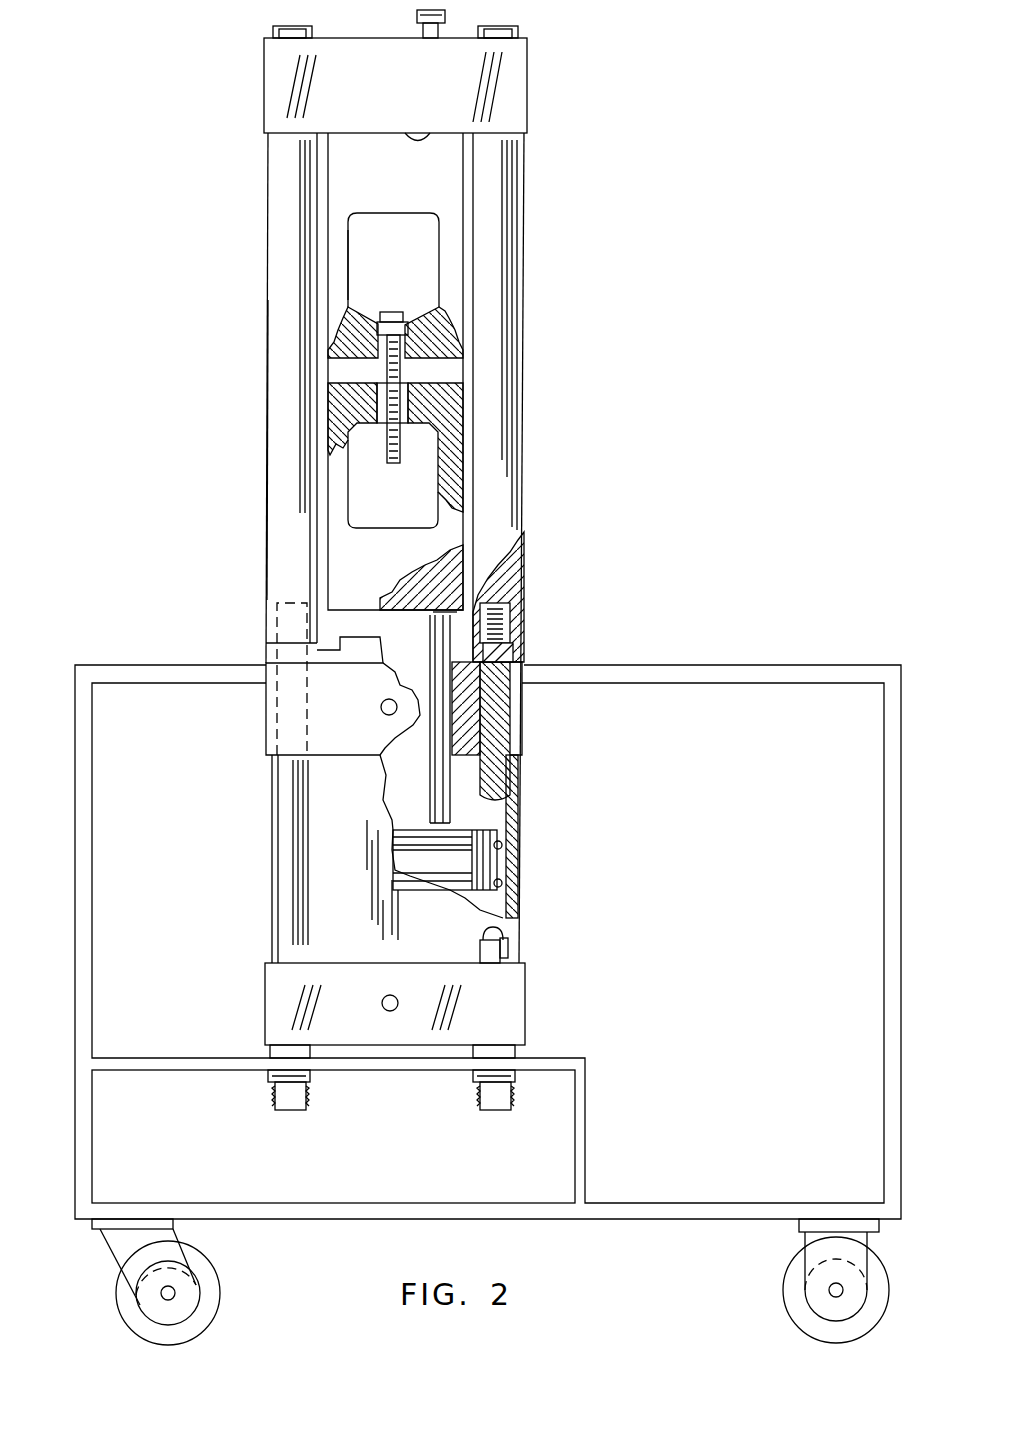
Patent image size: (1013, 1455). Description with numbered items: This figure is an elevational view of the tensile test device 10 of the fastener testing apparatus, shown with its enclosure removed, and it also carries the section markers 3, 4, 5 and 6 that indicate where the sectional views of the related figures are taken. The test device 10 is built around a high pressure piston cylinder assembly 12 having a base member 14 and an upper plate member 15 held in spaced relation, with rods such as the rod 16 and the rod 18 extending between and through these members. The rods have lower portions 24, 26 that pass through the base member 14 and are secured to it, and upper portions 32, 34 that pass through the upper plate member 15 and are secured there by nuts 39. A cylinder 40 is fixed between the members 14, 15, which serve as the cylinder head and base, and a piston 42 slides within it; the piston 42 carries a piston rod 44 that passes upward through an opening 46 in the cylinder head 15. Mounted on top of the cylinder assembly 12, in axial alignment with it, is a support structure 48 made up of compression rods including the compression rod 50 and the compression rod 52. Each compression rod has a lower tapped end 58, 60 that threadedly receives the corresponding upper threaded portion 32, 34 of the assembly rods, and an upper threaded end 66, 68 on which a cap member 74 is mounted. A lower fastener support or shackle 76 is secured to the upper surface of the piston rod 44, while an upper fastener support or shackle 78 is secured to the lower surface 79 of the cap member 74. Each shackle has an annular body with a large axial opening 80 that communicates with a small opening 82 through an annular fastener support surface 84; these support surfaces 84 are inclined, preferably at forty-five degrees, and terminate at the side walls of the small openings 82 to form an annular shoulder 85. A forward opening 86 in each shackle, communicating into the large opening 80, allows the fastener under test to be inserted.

The tensile test device 10 is at (527, 366).
The high pressure piston cylinder assembly 12 is at (507, 818).
The base member 14 is at (510, 1010).
The upper plate member 15 is at (266, 700).
The rod 16 is at (293, 872).
The rod 18 is at (510, 932).
The lower rod portion 24 is at (288, 962).
The lower rod portion 26 is at (500, 955).
The upper rod portion 32 is at (293, 650).
The upper rod portion 34 is at (505, 640).
The nuts 39 is at (514, 652).
The cylinder 40 is at (482, 817).
The piston 42 is at (478, 860).
The piston rod 44 is at (405, 806).
The opening 46 is at (445, 712).
The support structure 48 is at (470, 378).
The compression rod 50 is at (284, 383).
The compression rod 52 is at (512, 437).
The lower tapped end 58 is at (280, 548).
The lower tapped end 60 is at (514, 585).
The upper threaded end 66 is at (273, 172).
The upper threaded end 68 is at (508, 192).
The cap member 74 is at (510, 57).
The lower fastener support 76 is at (453, 527).
The upper fastener support 78 is at (348, 188).
The lower surface 79 is at (430, 133).
The large axial opening 80 is at (441, 281).
The small opening 82 is at (406, 362).
The annular fastener support surface 84 is at (433, 308).
The annular shoulder 85 is at (384, 362).
The forward opening 86 is at (415, 252).
The section line 3- 3 is at (239, 947).
The section line 4- 4 is at (222, 733).
The section line 5- 5 is at (607, 613).
The section line 6- 6 is at (562, 157).